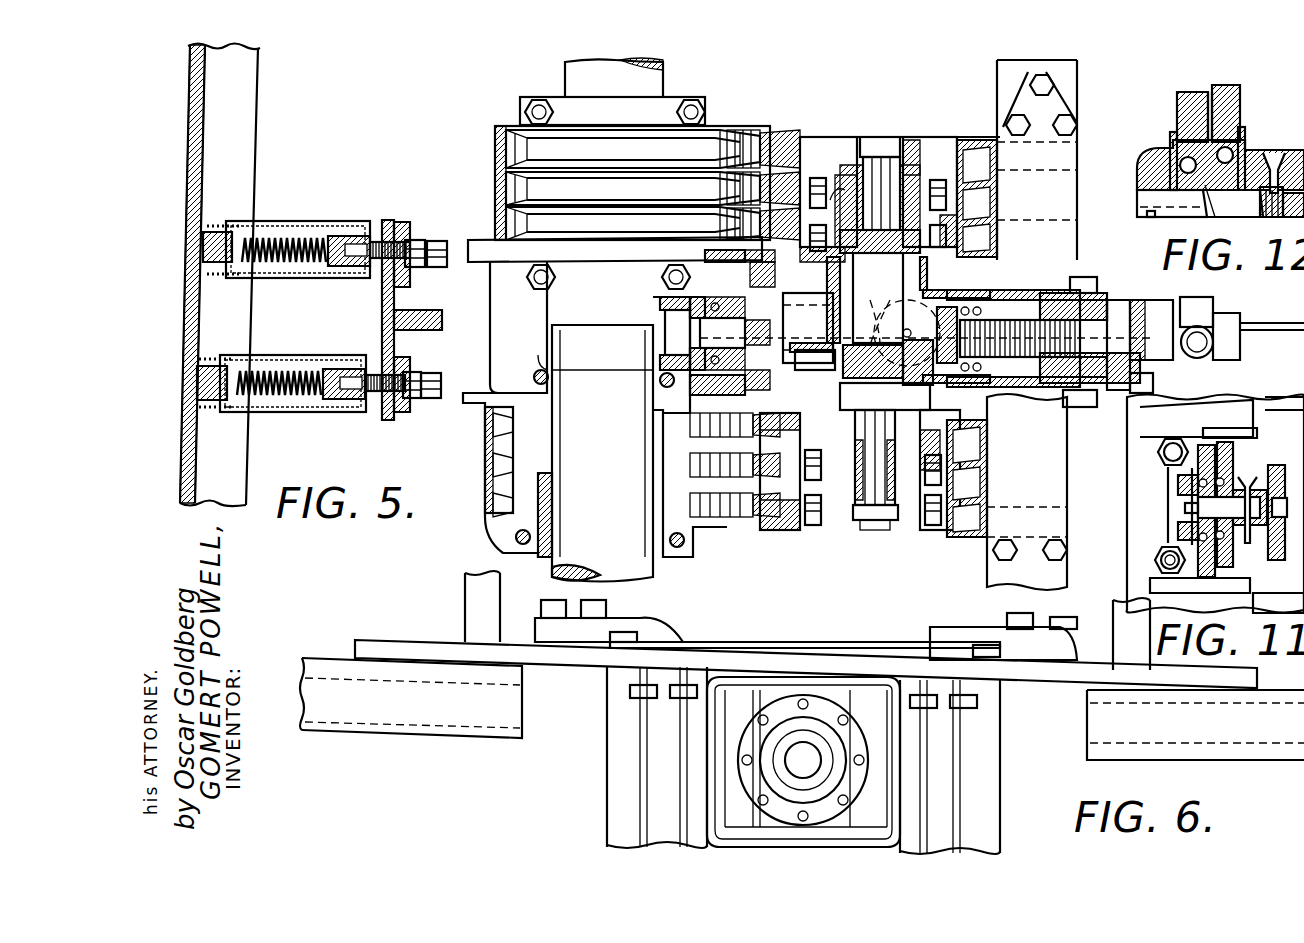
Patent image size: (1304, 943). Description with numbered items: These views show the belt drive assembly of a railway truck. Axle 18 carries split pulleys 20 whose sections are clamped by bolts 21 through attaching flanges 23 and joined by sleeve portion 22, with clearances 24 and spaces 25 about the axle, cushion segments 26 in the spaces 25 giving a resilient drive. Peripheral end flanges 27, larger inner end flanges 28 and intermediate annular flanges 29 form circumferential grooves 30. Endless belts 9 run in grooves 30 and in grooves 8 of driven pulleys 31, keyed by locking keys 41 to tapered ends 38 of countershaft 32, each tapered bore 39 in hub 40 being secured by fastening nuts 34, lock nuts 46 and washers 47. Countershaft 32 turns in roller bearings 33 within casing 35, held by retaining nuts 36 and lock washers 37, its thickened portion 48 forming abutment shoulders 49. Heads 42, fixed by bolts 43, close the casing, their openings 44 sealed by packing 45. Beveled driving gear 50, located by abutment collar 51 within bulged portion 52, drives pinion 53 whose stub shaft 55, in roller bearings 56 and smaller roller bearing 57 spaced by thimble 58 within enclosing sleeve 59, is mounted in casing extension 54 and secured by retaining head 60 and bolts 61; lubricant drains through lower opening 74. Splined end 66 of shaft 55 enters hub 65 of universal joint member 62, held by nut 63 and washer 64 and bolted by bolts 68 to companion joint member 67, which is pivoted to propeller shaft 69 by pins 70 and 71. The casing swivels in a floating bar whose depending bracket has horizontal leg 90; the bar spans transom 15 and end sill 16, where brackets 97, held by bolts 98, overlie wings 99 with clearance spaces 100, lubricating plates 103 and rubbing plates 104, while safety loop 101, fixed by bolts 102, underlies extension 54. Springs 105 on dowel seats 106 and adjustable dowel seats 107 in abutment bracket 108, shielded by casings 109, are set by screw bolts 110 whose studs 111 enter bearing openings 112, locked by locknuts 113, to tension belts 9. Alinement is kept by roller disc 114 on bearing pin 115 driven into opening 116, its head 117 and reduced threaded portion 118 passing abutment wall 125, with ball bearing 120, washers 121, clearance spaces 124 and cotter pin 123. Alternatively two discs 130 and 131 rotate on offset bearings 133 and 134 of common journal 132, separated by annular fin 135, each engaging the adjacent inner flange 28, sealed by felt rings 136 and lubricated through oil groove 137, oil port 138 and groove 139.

In FIG. 6, the driven pulley grooves 8 is at (985, 203).
In FIG. 6, the endless belts 9 is at (750, 143).
In FIG. 11, the endless belts 9 is at (1240, 410).
In FIG. 5, the transom members 15 is at (250, 117).
In FIG. 6, the end sills 16 is at (445, 745).
In FIG. 6, the axle 18 is at (565, 85).
In FIG. 6, the pulleys 20 is at (595, 409).
In FIG. 11, the pulleys 20 is at (1165, 420).
In FIG. 6, the bolts 21 is at (698, 110).
In FIG. 11, the bolts 21 is at (1172, 575).
In FIG. 6, the intermediate sleeve portion 22 is at (553, 302).
In FIG. 11, the intermediate sleeve portion 22 is at (1141, 537).
In FIG. 6, the attaching flanges 23 is at (542, 278).
In FIG. 6, the clearance 24 is at (655, 345).
In FIG. 6, the spaces 25 is at (665, 443).
In FIG. 6, the cushion segments 26 is at (553, 506).
In FIG. 6, the peripheral end flanges 27 is at (510, 130).
In FIG. 6, the inner end flanges 28 is at (480, 262).
In FIG. 11, the inner end flanges 28 is at (1255, 585).
In FIG. 6, the intermediate annular flanges 29 is at (652, 172).
In FIG. 6, the circumferential grooves 30 is at (633, 185).
In FIG. 6, the driven pulleys 31 is at (935, 140).
In FIG. 6, the countershaft 32 is at (878, 298).
In FIG. 6, the roller bearings 33 is at (840, 270).
In FIG. 6, the fastening nuts 34 is at (885, 175).
In FIG. 6, the casing 35 is at (830, 318).
In FIG. 6, the retaining nuts 36 is at (880, 243).
In FIG. 6, the lock washers 37 is at (990, 245).
In FIG. 6, the tapered shaft ends 38 is at (831, 177).
In FIG. 6, the tapered bore 39 is at (855, 490).
In FIG. 6, the hub 40 is at (930, 215).
In FIG. 6, the locking keys 41 is at (866, 175).
In FIG. 6, the heads 42 is at (800, 405).
In FIG. 6, the bolts 43 is at (815, 412).
In FIG. 6, the openings 44 is at (815, 165).
In FIG. 6, the packing 45 is at (950, 160).
In FIG. 6, the lock nuts 46 is at (897, 530).
In FIG. 6, the washers 47 is at (840, 175).
In FIG. 6, the thickened portion 48 is at (830, 292).
In FIG. 6, the abutment shoulders 49 is at (925, 283).
In FIG. 6, the beveled driving gear 50 is at (820, 360).
In FIG. 6, the abutment collar 51 is at (925, 342).
In FIG. 6, the bulged portion 52 is at (725, 375).
In FIG. 6, the pinion 53 is at (985, 298).
In FIG. 6, the casing extension 54 is at (1020, 295).
In FIG. 6, the stub shaft 55 is at (1020, 338).
In FIG. 6, the roller bearings 56 is at (959, 335).
In FIG. 6, the smaller roller bearing 57 is at (1092, 338).
In FIG. 6, the spacing thimble 58 is at (1015, 339).
In FIG. 6, the enclosing sleeve 59 is at (1013, 338).
In FIG. 6, the retaining head 60 is at (1130, 292).
In FIG. 6, the bolts 61 is at (1100, 293).
In FIG. 6, the universal joint member 62 is at (1089, 402).
In FIG. 6, the nut 63 is at (1150, 318).
In FIG. 6, the washer 64 is at (1154, 388).
In FIG. 6, the hub 65 is at (1097, 280).
In FIG. 6, the splined end 66 is at (1100, 395).
In FIG. 6, the companion joint member 67 is at (1195, 320).
In FIG. 6, the bolts 68 is at (1135, 395).
In FIG. 6, the propeller shaft 69 is at (1272, 315).
In FIG. 6, the pin 70 is at (1200, 350).
In FIG. 6, the pin 71 is at (1215, 310).
In FIG. 6, the lower drain opening 74 is at (907, 333).
In FIG. 12, the bracket leg 90 is at (1140, 165).
In FIG. 6, the brackets 97 is at (1050, 90).
In FIG. 6, the bolts 98 is at (1063, 125).
In FIG. 6, the wings 99 is at (1067, 465).
In FIG. 6, the clearance spaces 100 is at (620, 640).
In FIG. 6, the safety loop 101 is at (710, 756).
In FIG. 6, the bolts 102 is at (685, 698).
In FIG. 6, the lubricating bearing plates 103 is at (925, 645).
In FIG. 6, the steel rubbing plates 104 is at (620, 660).
In FIG. 5, the springs 105 is at (205, 365).
In FIG. 5, the dowel seats 106 is at (210, 232).
In FIG. 5, the dowel seats 107 is at (377, 227).
In FIG. 5, the abutment bracket 108 is at (382, 313).
In FIG. 5, the spring casings 109 is at (250, 358).
In FIG. 5, the screw bolts 110 is at (436, 268).
In FIG. 5, the dowel engaging studs 111 is at (368, 278).
In FIG. 5, the bearing openings 112 is at (356, 235).
In FIG. 5, the locknuts 113 is at (411, 373).
In FIG. 6, the roller disc 114 is at (702, 395).
In FIG. 6, the bearing pin 115 is at (775, 270).
In FIG. 6, the opening 116 is at (690, 302).
In FIG. 6, the head 117 is at (680, 318).
In FIG. 12, the head 117 is at (1143, 190).
In FIG. 6, the reduced threaded portion 118 is at (722, 333).
In FIG. 6, the ball bearing 120 is at (670, 380).
In FIG. 12, the ball bearing 120 is at (1140, 170).
In FIG. 6, the washers 121 is at (690, 360).
In FIG. 12, the washers 121 is at (1180, 158).
In FIG. 12, the cotter pin 123 is at (1273, 155).
In FIG. 11, the cotter pin 123 is at (1256, 497).
In FIG. 6, the clearance spaces 124 is at (671, 333).
In FIG. 11, the abutment wall 125 is at (1242, 509).
In FIG. 12, the disc 130 is at (1177, 112).
In FIG. 11, the disc 130 is at (1190, 567).
In FIG. 12, the disc 131 is at (1240, 115).
In FIG. 11, the disc 131 is at (1240, 443).
In FIG. 12, the common journal 132 is at (1253, 204).
In FIG. 12, the bearing 133 is at (1140, 210).
In FIG. 12, the bearing 134 is at (1245, 130).
In FIG. 12, the annular fin 135 is at (1210, 95).
In FIG. 12, the felt rings 136 is at (1172, 135).
In FIG. 12, the oil groove 137 is at (1150, 215).
In FIG. 11, the oil port 138 is at (1185, 507).
In FIG. 12, the groove 139 is at (1219, 213).